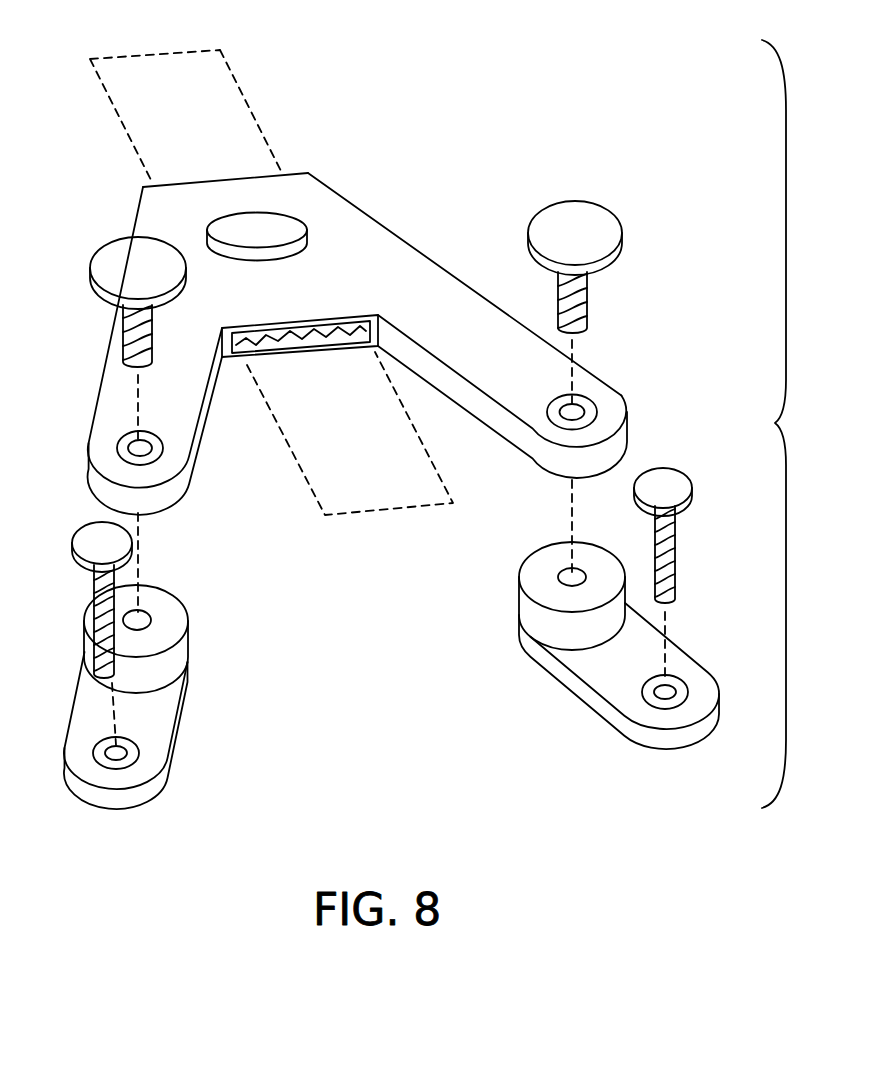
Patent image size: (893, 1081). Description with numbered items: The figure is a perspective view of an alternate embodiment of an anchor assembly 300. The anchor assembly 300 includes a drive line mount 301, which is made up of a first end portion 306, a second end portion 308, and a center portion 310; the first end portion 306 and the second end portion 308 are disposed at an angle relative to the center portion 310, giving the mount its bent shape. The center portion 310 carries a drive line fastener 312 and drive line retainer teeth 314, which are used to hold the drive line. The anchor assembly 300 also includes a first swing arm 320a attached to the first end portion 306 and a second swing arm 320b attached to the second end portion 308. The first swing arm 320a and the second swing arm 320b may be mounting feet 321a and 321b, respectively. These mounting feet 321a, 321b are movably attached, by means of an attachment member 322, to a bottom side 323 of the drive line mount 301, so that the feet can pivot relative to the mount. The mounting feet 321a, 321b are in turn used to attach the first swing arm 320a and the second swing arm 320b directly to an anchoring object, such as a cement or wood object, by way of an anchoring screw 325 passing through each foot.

The anchor assembly 300 is at (540, 40).
The drive line mount 301 is at (404, 238).
The first end portion 306 is at (80, 452).
The second end portion 308 is at (628, 408).
The center portion 310 is at (351, 232).
The drive line fastener 312 is at (280, 232).
The drive line retainer teeth 314 is at (282, 352).
The first swing arm 320a is at (162, 717).
The second swing arm 320b is at (606, 668).
The mounting foot 321a is at (157, 762).
The mounting foot 321b is at (695, 690).
The attachment member 322 is at (120, 268).
The bottom side 323 is at (186, 514).
The anchoring screw 325 is at (92, 542).